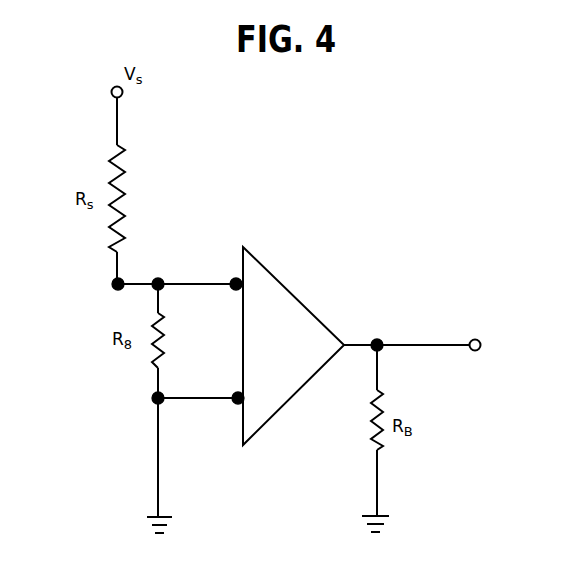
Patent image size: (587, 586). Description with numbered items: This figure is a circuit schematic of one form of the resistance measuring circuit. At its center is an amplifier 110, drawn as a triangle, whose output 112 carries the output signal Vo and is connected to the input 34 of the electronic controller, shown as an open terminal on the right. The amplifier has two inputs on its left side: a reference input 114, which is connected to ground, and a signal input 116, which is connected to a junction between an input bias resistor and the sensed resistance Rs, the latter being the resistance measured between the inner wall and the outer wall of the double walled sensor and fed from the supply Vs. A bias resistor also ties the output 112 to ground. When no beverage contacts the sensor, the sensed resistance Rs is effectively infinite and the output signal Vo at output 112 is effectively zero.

The amplifier 110 is at (270, 297).
The output 112 is at (356, 345).
The reference input 114 is at (237, 402).
The signal input 116 is at (235, 283).
The input 34 is at (481, 340).